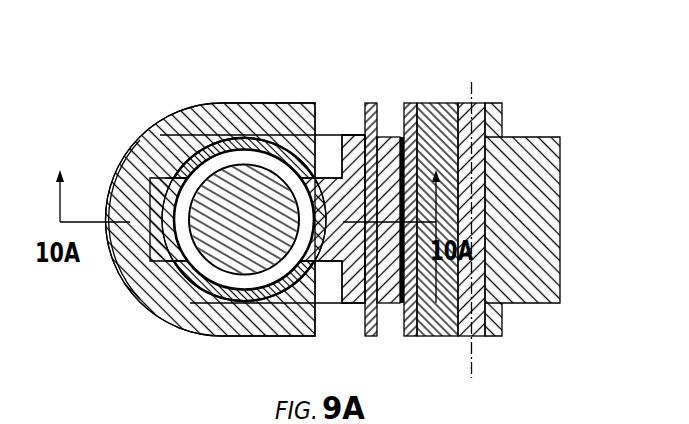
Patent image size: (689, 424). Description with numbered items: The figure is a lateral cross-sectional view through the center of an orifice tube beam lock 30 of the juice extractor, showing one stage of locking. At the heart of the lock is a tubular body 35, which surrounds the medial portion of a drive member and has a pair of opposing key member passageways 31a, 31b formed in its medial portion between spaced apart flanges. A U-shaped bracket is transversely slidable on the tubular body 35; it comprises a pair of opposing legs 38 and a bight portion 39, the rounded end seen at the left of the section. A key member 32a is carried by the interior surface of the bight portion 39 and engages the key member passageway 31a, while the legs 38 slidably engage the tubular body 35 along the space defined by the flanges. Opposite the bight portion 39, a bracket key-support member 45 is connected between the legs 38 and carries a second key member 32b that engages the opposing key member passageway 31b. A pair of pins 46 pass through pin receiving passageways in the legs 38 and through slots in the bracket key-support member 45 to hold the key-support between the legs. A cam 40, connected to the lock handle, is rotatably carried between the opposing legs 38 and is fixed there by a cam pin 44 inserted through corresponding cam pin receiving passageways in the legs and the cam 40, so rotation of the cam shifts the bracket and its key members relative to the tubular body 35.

The orifice tube beam lock 30 is at (418, 82).
The key member passageway 31a is at (120, 168).
The key member passageway 31b is at (325, 212).
The key member 32a is at (168, 175).
The key member 32b is at (332, 178).
The tubular body 35 is at (195, 157).
The opposing legs 38 is at (302, 103).
The bight portion 39 is at (107, 260).
The cam 40 is at (543, 137).
The cam pin 44 is at (477, 337).
The bracket key-support member 45 is at (358, 103).
The pins 46 is at (370, 336).